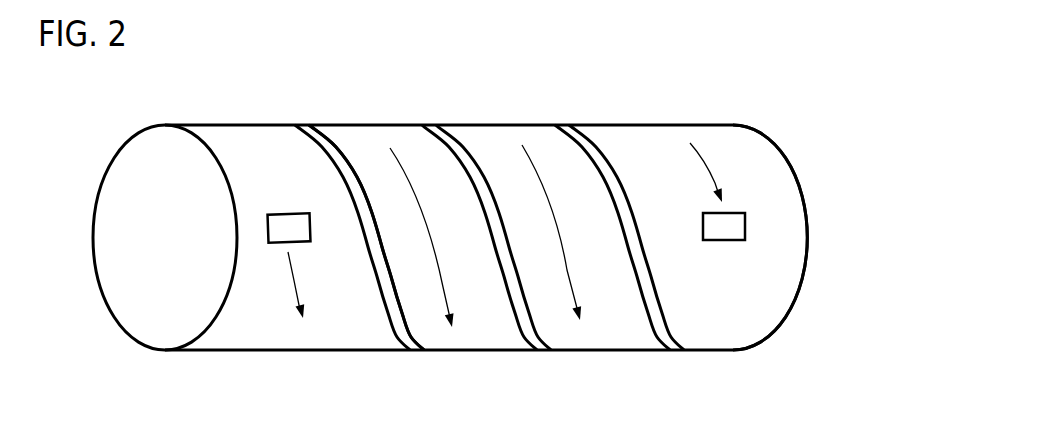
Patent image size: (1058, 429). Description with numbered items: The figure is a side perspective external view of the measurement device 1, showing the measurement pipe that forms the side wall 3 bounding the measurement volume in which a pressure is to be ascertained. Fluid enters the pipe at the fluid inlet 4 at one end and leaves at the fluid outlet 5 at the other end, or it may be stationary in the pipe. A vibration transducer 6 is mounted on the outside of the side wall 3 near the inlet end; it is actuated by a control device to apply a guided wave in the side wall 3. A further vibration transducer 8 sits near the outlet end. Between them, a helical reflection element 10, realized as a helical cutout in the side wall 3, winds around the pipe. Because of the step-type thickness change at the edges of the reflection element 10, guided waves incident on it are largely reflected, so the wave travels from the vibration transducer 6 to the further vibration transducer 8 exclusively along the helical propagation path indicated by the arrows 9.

The measurement device 1 is at (621, 92).
The side wall 3 is at (388, 140).
The fluid inlet 4 is at (150, 277).
The fluid outlet 5 is at (832, 260).
The vibration transducer 6 is at (285, 213).
The further vibration transducer 8 is at (728, 241).
The arrows 9 is at (295, 280).
The helical reflection element 10 is at (385, 302).